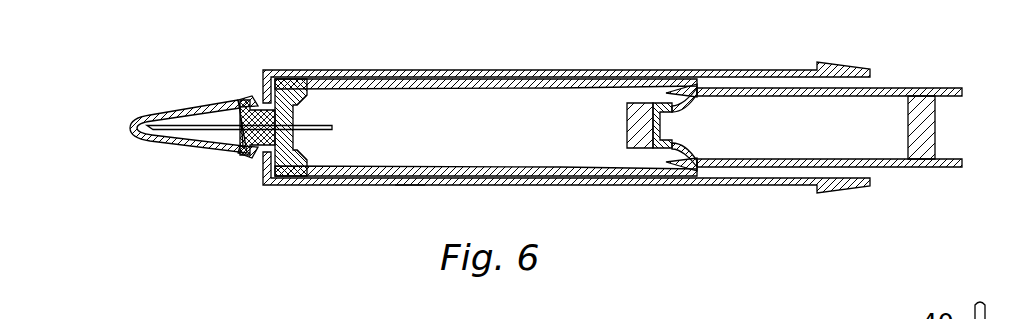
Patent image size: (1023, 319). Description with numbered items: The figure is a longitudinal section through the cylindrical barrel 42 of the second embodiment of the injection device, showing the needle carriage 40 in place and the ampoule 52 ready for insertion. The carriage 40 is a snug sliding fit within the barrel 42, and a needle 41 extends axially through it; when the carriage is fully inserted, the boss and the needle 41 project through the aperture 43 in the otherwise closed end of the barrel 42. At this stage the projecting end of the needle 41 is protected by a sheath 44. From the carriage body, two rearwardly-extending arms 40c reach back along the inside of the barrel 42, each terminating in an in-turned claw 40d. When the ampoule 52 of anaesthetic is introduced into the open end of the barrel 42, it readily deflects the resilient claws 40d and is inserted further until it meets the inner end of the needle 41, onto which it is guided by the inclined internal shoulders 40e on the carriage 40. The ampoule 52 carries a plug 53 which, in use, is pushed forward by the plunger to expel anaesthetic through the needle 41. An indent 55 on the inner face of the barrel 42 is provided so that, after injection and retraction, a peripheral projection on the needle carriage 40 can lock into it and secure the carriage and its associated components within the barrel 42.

The needle carriage 40 is at (293, 96).
The rearwardly-extending arms 40c is at (551, 88).
The in-turned claws 40d is at (668, 157).
The inclined internal shoulders 40e is at (305, 100).
The needle 41 is at (236, 126).
The cylindrical barrel 42 is at (368, 74).
The aperture 43 is at (265, 157).
The sheath 44 is at (157, 141).
The ampoule 52 is at (770, 92).
The plug 53 is at (925, 117).
The indent 55 is at (410, 186).